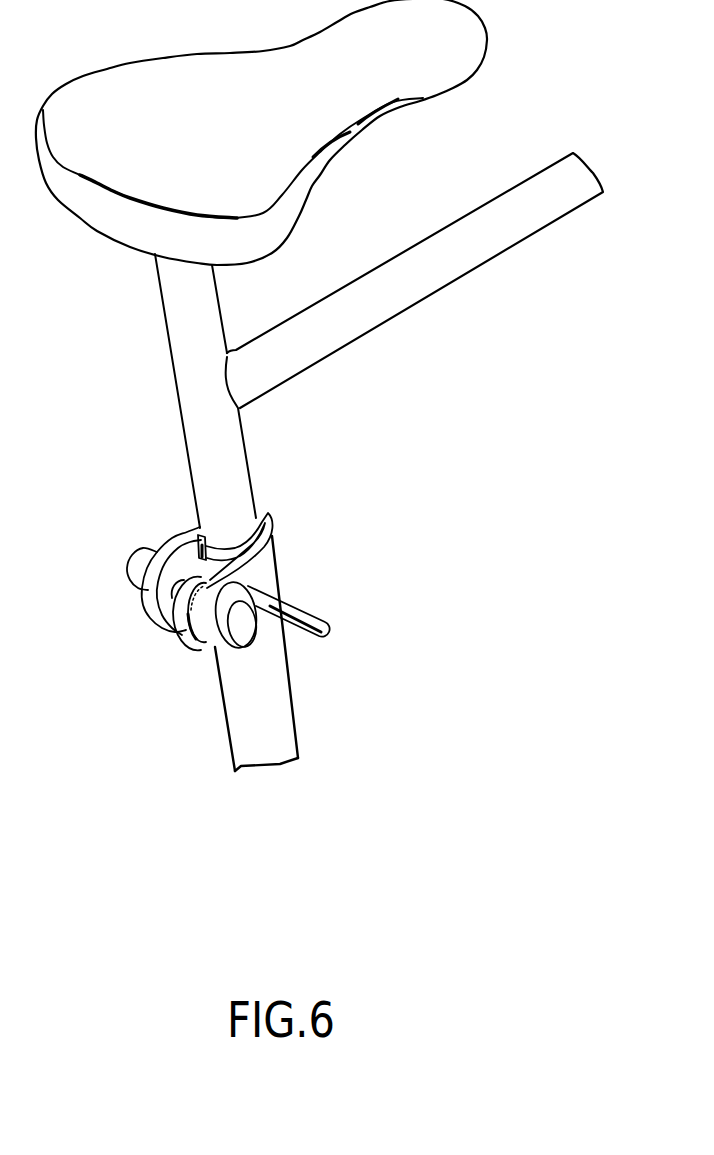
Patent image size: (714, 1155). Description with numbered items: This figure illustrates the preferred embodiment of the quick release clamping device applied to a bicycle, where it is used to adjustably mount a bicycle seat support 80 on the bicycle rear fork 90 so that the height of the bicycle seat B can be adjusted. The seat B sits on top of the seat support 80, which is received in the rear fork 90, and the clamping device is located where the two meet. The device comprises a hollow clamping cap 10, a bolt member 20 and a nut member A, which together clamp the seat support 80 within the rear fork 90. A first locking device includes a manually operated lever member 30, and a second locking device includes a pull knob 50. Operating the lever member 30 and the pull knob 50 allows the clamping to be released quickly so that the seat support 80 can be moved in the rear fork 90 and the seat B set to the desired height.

The bicycle seat B is at (128, 165).
The bicycle seat support 80 is at (190, 382).
The bicycle rear fork 90 is at (268, 737).
The bolt member 20 is at (150, 618).
The nut member A is at (135, 568).
The hollow clamping cap 10 is at (209, 608).
The pull knob 50 is at (244, 628).
The lever member 30 is at (295, 603).